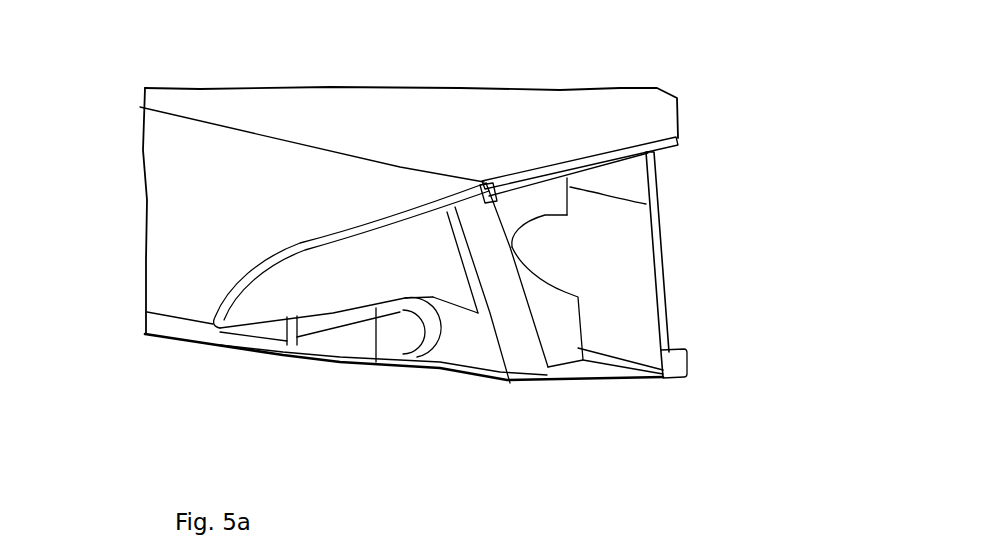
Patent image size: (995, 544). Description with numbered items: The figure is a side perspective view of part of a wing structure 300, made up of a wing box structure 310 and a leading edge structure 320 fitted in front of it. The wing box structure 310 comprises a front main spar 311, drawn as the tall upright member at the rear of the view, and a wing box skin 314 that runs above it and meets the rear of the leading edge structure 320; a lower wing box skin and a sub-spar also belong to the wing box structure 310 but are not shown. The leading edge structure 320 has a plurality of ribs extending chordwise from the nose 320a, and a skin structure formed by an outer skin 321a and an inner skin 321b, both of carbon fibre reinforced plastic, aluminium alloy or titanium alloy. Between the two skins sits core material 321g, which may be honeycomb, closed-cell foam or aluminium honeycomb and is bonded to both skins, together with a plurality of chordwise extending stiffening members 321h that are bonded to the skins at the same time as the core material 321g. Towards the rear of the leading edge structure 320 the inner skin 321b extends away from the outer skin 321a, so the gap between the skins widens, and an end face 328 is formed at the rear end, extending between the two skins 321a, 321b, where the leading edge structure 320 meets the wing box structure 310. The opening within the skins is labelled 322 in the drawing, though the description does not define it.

The wing structure 300 is at (412, 249).
The wing box structure 310 is at (639, 286).
The front main spar 311 is at (663, 278).
The wing box skin 314 is at (640, 122).
The leading edge structure 320 is at (306, 253).
The nose 320a is at (167, 332).
The outer skin 321a is at (170, 248).
The inner skin 321b is at (377, 242).
The core material 321g is at (508, 336).
The stiffening members 321h is at (497, 201).
The opening 322 is at (337, 298).
The end face 328 is at (493, 186).